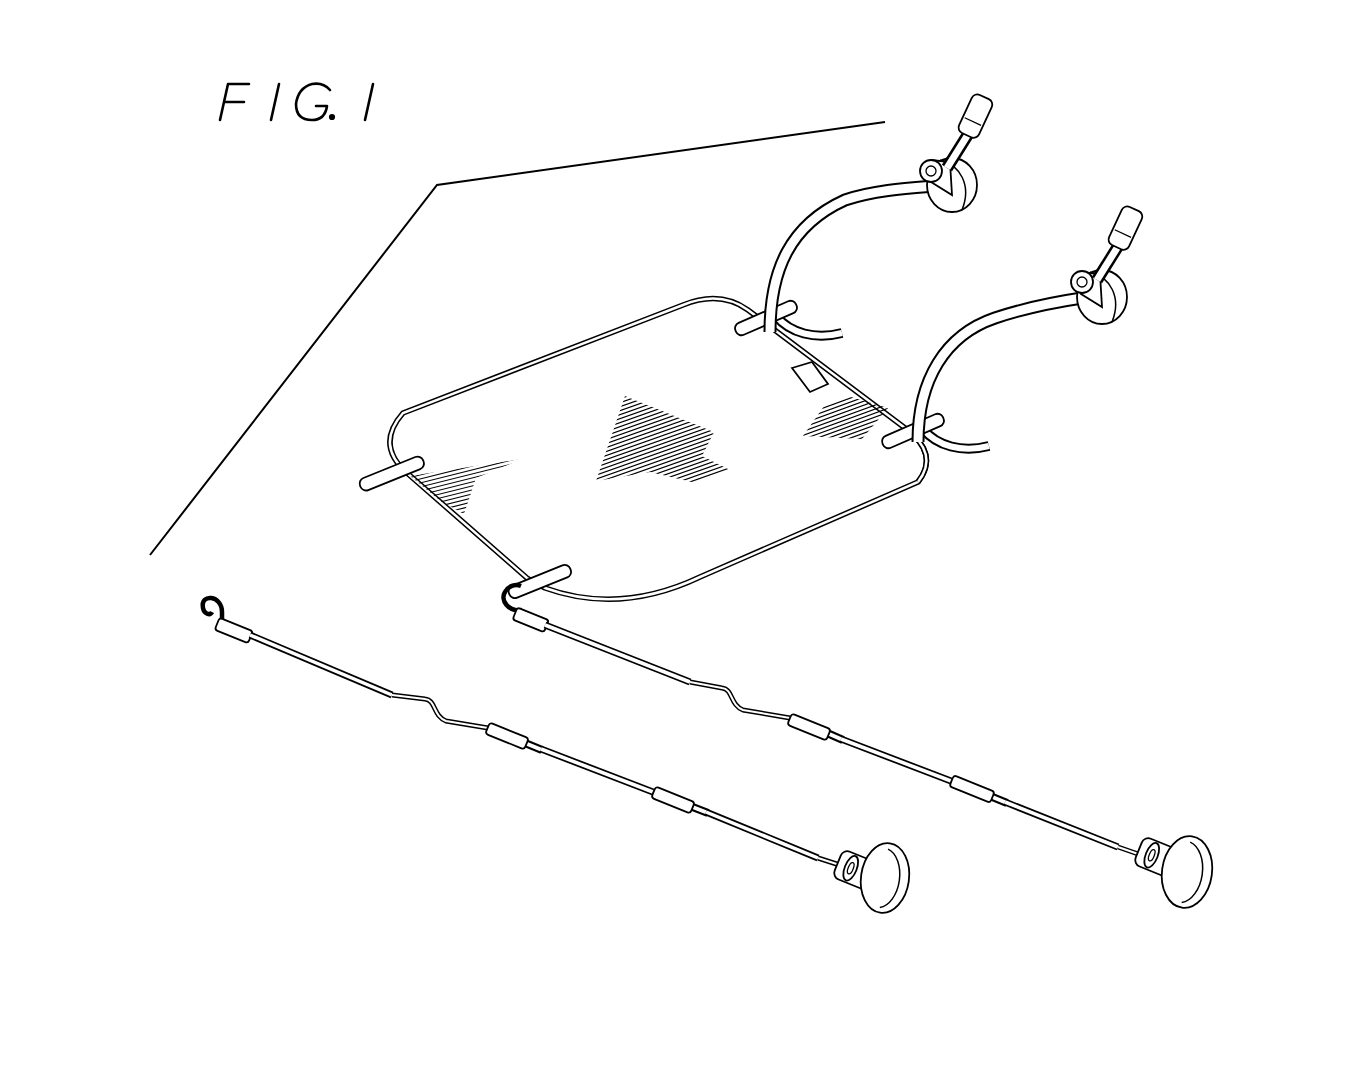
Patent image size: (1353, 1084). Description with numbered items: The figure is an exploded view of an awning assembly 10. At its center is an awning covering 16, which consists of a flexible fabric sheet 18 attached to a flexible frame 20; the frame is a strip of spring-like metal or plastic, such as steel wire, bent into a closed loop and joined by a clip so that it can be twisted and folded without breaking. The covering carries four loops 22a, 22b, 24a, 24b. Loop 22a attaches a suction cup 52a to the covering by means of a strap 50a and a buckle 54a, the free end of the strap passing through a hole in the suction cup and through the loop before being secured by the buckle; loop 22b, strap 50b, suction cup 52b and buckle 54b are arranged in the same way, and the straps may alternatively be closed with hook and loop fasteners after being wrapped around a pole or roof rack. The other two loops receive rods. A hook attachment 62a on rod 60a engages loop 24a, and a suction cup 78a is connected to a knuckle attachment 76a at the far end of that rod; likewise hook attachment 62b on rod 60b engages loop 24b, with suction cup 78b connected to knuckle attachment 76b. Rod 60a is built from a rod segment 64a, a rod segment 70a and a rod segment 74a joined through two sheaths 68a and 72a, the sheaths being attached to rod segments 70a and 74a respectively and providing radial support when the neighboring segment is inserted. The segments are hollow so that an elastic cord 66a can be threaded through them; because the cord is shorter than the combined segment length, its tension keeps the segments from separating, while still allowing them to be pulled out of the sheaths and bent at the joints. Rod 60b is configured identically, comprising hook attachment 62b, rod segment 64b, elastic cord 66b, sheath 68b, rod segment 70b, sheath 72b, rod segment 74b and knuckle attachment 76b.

The awning assembly 10 is at (446, 180).
The awning covering 16 is at (580, 400).
The flexible fabric sheet 18 is at (790, 517).
The flexible frame 20 is at (935, 486).
The loop 22a is at (795, 318).
The loop 22b is at (942, 432).
The loop 24a is at (366, 472).
The loop 24b is at (520, 580).
The strap 50a is at (848, 205).
The strap 50b is at (1028, 300).
The suction cup 52a is at (982, 190).
The suction cup 52b is at (1130, 292).
The buckle 54a is at (992, 110).
The buckle 54b is at (1140, 218).
The rod 60a is at (575, 797).
The rod 60b is at (823, 655).
The hook attachment 62a is at (224, 638).
The hook attachment 62b is at (503, 612).
The rod segment 64a is at (318, 662).
The rod segment 64b is at (578, 640).
The elastic cord 66a is at (428, 714).
The elastic cord 66b is at (738, 695).
The sheath 68a is at (500, 748).
The sheath 68b is at (825, 718).
The rod segment 70a is at (600, 764).
The rod segment 70b is at (882, 745).
The sheath 72a is at (685, 798).
The sheath 72b is at (985, 783).
The rod segment 74a is at (738, 832).
The rod segment 74b is at (1065, 818).
The knuckle attachment 76a is at (838, 870).
The knuckle attachment 76b is at (1142, 845).
The suction cup 78a is at (912, 886).
The suction cup 78b is at (1215, 870).